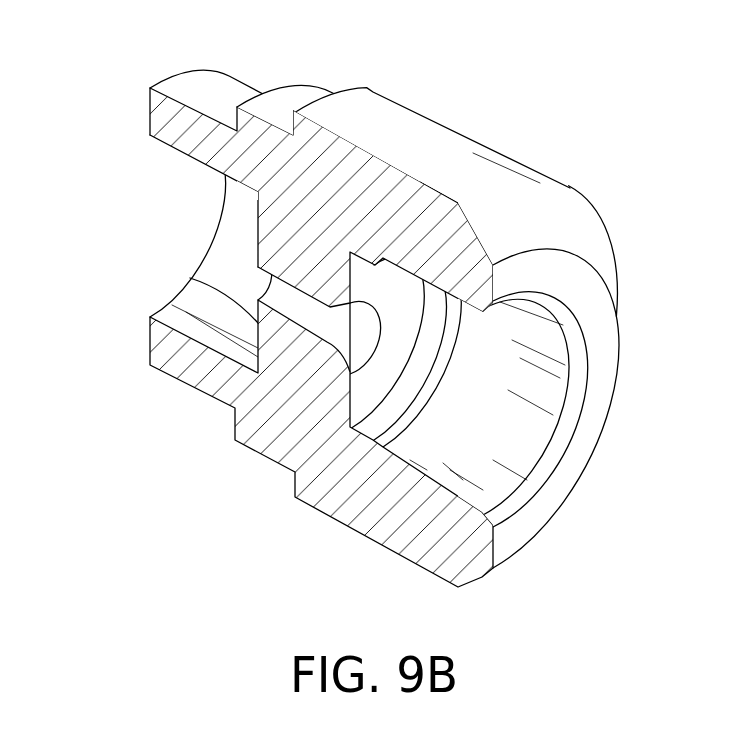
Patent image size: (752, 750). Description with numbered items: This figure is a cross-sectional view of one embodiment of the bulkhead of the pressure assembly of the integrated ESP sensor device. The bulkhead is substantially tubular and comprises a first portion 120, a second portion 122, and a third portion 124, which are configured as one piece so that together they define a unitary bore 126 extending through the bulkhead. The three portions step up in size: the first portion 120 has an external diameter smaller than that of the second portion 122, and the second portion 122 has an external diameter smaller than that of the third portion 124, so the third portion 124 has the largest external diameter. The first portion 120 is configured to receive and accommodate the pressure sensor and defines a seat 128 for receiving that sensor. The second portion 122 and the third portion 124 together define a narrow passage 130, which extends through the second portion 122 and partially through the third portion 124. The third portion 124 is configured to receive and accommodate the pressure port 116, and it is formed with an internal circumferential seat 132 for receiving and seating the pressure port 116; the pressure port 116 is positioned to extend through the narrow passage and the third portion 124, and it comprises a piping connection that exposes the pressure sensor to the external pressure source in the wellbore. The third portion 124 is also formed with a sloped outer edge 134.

The pressure port 116 is at (503, 413).
The first portion 120 is at (203, 85).
The second portion 122 is at (293, 98).
The third portion 124 is at (458, 145).
The unitary bore 126 is at (242, 252).
The seat 128 is at (190, 278).
The narrow passage 130 is at (302, 312).
The internal circumferential seat 132 is at (380, 443).
The sloped outer edge 134 is at (568, 220).